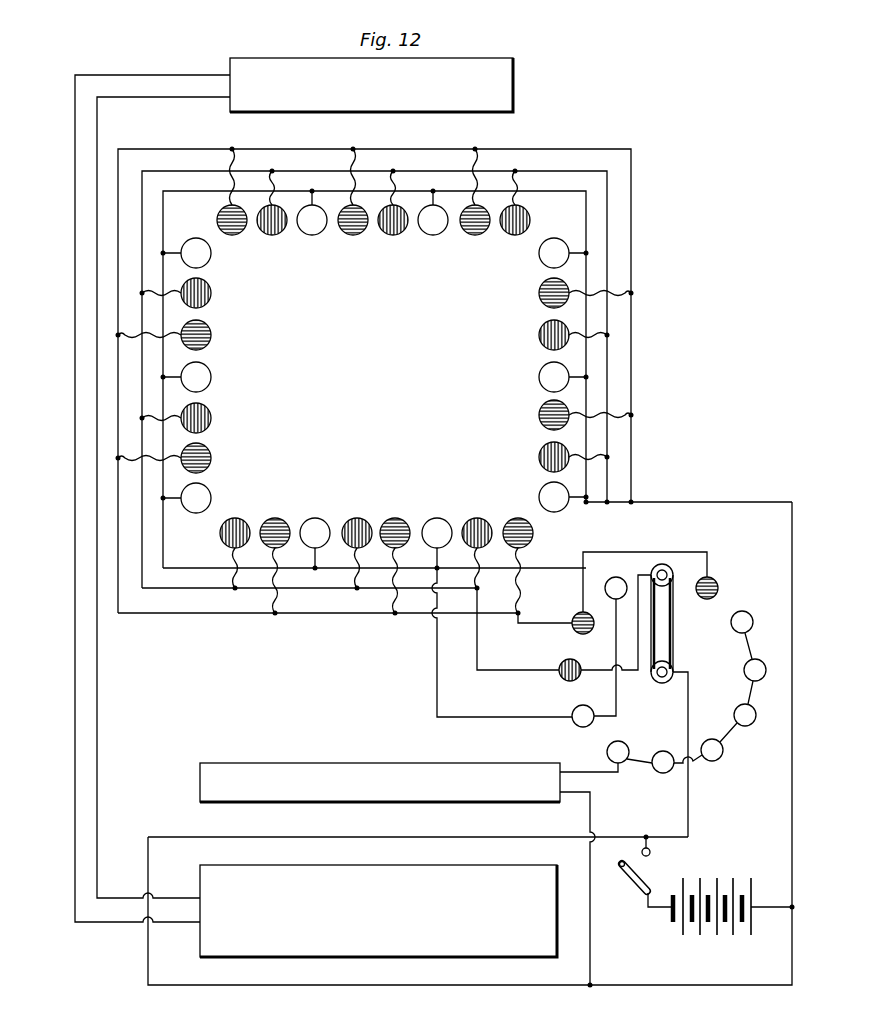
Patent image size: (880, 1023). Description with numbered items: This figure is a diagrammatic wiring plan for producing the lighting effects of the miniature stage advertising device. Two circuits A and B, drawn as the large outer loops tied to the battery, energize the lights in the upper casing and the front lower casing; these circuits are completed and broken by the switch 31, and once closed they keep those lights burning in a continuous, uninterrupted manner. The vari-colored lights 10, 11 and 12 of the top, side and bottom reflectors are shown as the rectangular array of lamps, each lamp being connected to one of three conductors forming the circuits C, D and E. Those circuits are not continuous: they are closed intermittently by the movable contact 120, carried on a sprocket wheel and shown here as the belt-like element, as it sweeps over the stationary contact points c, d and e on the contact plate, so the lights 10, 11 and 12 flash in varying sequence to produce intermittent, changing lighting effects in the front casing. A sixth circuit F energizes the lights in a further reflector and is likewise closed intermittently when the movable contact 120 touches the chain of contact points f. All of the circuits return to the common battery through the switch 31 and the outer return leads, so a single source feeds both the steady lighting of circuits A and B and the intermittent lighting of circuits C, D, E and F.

The vari-colored lights 10 is at (314, 236).
The vari-colored lights 11 is at (273, 236).
The vari-colored lights 12 is at (217, 220).
The movable contact 120 is at (667, 636).
The switch 31 is at (640, 874).
The circuit A is at (378, 911).
The circuit B is at (371, 85).
The sixth circuit F is at (380, 782).
The circuit / contact points C is at (118, 196).
The circuit / contact points D is at (142, 228).
The circuit / contact points E is at (163, 270).
The contact points c is at (574, 618).
The contact points d is at (562, 666).
The contact points e is at (610, 581).
The contact points f is at (750, 612).